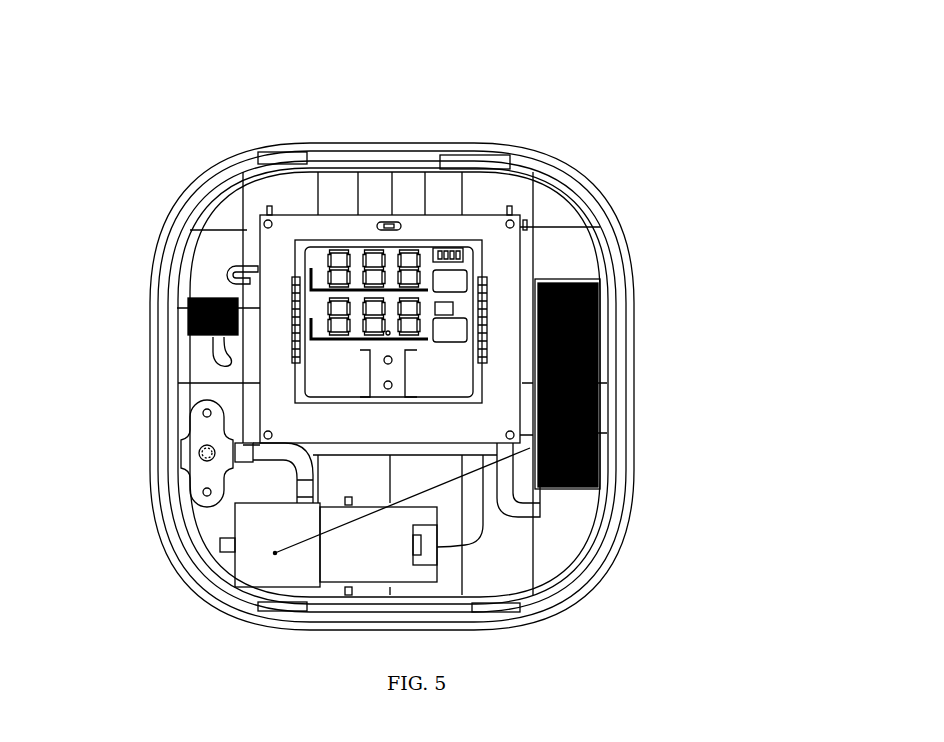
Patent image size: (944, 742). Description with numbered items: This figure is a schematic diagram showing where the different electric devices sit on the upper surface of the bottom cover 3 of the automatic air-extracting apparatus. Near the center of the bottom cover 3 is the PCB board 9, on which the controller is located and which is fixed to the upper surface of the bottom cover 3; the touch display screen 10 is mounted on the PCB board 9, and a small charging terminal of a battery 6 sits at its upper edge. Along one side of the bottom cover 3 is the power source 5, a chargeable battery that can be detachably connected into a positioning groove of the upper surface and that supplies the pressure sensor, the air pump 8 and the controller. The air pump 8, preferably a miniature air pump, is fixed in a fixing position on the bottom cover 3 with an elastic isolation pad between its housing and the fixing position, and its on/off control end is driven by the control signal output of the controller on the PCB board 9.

The bottom cover 3 is at (318, 145).
The power source 5 is at (602, 333).
The charging terminal of a battery 6 is at (398, 223).
The air pump 8 is at (603, 418).
The PCB board 9 is at (283, 242).
The touch display screen 10 is at (416, 306).